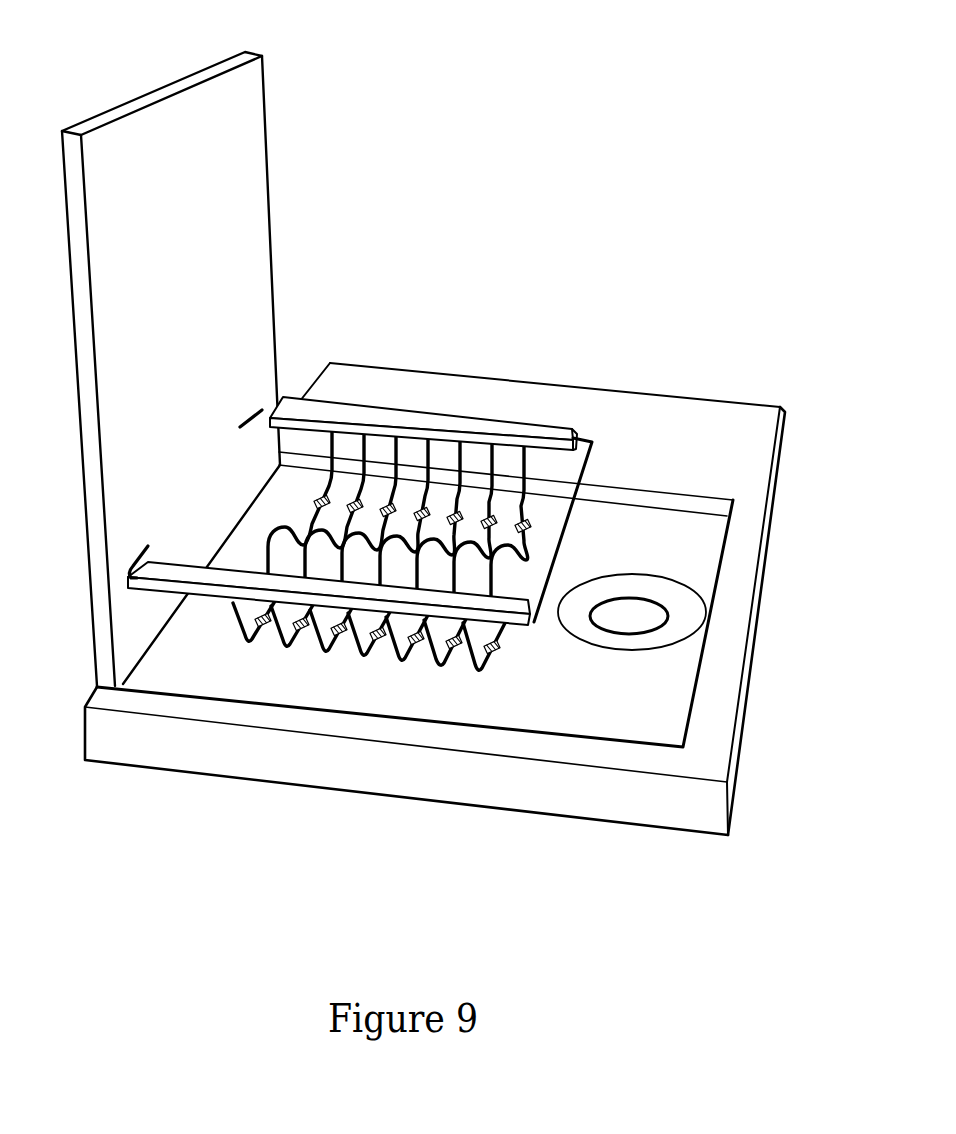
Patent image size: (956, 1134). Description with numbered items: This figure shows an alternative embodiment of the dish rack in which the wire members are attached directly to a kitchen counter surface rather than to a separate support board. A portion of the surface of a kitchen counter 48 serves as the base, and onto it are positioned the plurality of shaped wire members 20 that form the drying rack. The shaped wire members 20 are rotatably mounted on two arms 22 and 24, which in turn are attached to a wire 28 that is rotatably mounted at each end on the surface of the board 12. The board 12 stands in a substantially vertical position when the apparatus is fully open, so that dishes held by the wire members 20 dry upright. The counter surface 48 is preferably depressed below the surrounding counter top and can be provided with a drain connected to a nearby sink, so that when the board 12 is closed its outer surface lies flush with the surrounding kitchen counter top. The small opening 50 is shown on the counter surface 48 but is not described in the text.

The board 12 is at (228, 109).
The shaped wire members 20 is at (493, 583).
The arm 22 is at (385, 412).
The arm 24 is at (188, 570).
The wire 28 is at (147, 548).
The kitchen counter 48 is at (627, 710).
The mounting hole 50 is at (633, 617).